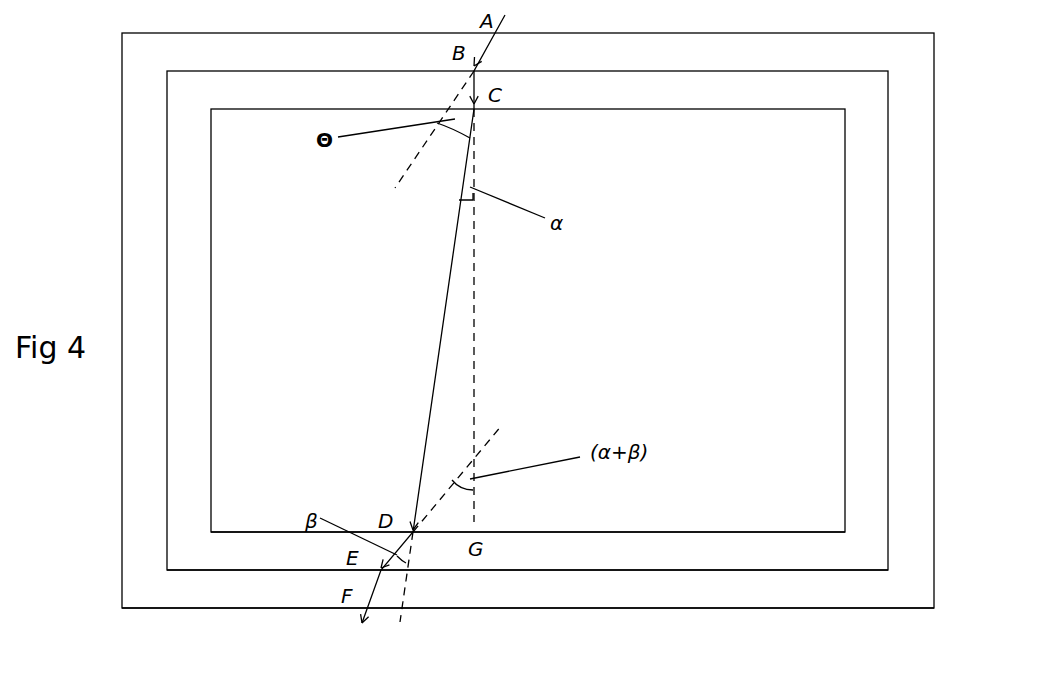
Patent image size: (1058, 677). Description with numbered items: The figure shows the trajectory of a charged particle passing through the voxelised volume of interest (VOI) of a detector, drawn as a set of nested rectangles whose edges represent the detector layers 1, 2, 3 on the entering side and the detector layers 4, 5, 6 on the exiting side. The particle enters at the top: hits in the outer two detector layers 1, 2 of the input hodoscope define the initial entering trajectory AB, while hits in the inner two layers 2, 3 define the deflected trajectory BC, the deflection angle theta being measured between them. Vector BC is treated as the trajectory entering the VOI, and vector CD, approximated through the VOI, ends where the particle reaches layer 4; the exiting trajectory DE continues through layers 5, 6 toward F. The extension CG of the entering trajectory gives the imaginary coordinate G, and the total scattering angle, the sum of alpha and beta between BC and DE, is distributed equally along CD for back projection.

The outer detector layer 1 is at (528, 308).
The detector layer 2 is at (527, 308).
The inner detector layer 3 is at (528, 307).
The detector layer 4 is at (528, 520).
The detector layer 5 is at (527, 557).
The detector layer 6 is at (528, 596).